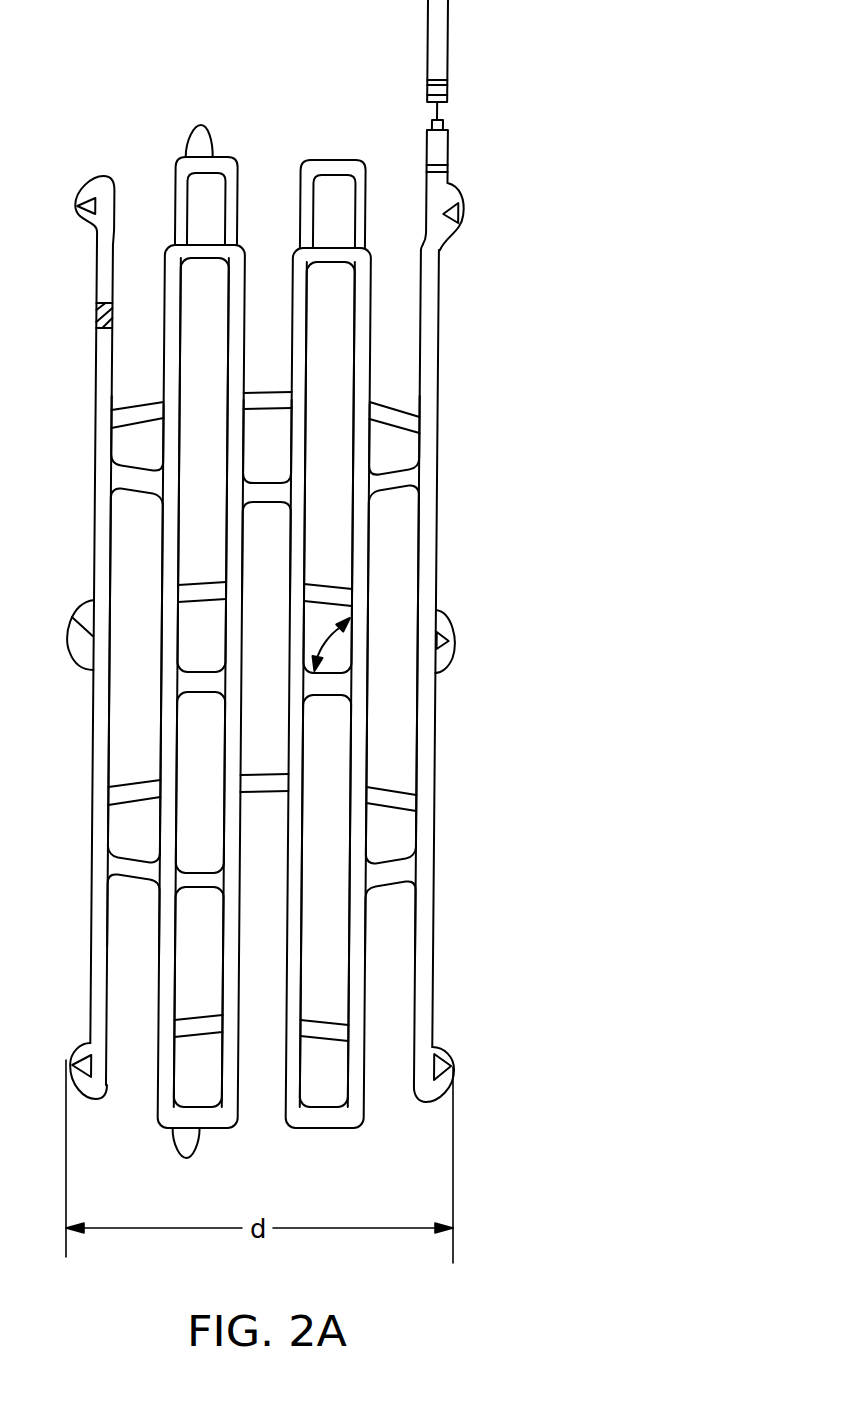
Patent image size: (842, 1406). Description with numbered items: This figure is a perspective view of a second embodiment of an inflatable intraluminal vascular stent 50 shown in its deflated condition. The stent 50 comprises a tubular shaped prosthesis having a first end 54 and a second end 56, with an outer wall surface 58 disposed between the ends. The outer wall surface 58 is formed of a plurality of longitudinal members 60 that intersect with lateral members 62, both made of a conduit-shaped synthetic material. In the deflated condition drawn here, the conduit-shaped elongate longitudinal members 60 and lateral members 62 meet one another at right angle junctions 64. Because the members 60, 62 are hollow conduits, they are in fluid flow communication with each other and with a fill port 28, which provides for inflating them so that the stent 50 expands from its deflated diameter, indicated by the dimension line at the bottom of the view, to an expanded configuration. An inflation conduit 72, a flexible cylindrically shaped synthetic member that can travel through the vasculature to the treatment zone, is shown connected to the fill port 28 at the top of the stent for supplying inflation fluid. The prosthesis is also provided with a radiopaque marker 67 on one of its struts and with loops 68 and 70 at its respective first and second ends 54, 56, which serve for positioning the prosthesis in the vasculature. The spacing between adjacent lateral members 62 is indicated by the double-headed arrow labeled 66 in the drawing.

The fill port 28 is at (440, 148).
The inflatable intraluminal vascular stent 50 is at (582, 240).
The first end 54 is at (394, 1100).
The second end 56 is at (270, 168).
The outer wall surface 58 is at (458, 378).
The longitudinal members 60 is at (438, 733).
The lateral members 62 is at (394, 866).
The right angle junctions 64 is at (428, 872).
The spacing between loops 66 is at (338, 642).
The radiopaque marker 67 is at (94, 320).
The loop 68 is at (176, 1142).
The loop 70 is at (182, 147).
The inflation conduit 72 is at (443, 55).